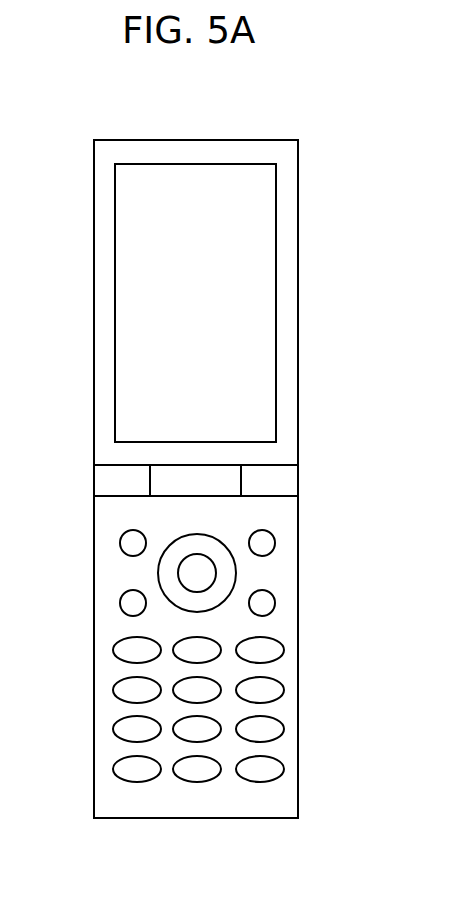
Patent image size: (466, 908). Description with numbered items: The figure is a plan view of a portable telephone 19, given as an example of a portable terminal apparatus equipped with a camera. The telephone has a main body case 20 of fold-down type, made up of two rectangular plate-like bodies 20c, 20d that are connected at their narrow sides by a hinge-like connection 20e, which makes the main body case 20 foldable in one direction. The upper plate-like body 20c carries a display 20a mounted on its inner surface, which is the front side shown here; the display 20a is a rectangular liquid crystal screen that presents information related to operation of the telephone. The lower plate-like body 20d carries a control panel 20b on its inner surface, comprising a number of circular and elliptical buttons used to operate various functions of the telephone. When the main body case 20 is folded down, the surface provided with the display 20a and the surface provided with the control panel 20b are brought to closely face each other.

The portable telephone 19 is at (82, 218).
The main body case 20 is at (93, 328).
The display 20a is at (240, 283).
The control panel 20b is at (188, 575).
The plate-like body 20c is at (292, 199).
The plate-like body 20d is at (290, 714).
The hinge-like connection 20e is at (228, 483).